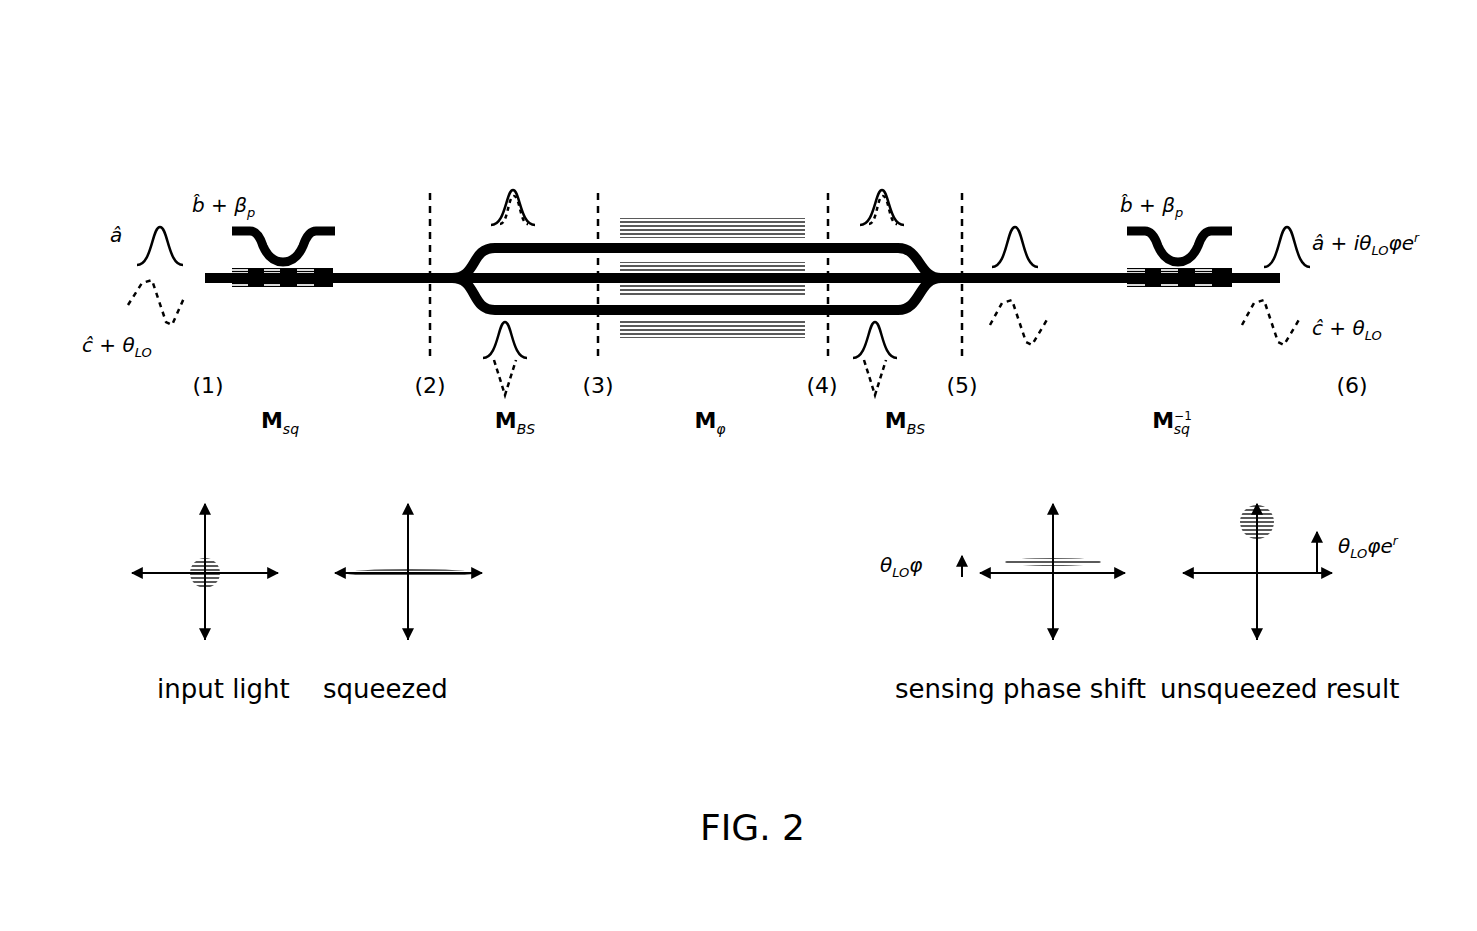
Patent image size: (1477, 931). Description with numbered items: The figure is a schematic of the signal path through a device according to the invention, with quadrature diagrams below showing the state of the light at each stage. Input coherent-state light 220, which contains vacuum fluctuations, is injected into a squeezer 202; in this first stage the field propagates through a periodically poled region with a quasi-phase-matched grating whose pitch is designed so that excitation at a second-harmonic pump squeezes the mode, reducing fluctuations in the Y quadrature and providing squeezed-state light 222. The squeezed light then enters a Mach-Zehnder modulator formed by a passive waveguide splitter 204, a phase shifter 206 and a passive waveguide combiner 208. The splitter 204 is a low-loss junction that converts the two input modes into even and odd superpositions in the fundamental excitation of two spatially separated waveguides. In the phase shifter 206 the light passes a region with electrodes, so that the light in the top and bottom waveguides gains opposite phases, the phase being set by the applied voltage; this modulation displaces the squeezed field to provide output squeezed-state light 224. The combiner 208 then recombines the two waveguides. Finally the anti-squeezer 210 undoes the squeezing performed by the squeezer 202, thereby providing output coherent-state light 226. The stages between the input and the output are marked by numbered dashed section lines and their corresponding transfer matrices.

The squeezer 202 is at (288, 196).
The passive waveguide splitter 204 is at (515, 154).
The phase shifter 206 is at (727, 196).
The passive waveguide combiner 208 is at (886, 152).
The anti-squeezer 210 is at (1192, 177).
The input coherent-state light 220 is at (166, 595).
The squeezed-state light 222 is at (436, 594).
The output squeezed-state light 224 is at (1020, 540).
The output coherent-state light 226 is at (1290, 512).